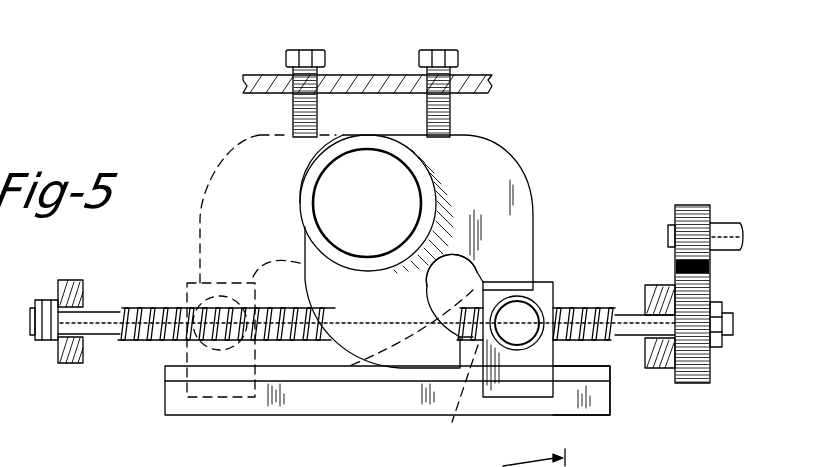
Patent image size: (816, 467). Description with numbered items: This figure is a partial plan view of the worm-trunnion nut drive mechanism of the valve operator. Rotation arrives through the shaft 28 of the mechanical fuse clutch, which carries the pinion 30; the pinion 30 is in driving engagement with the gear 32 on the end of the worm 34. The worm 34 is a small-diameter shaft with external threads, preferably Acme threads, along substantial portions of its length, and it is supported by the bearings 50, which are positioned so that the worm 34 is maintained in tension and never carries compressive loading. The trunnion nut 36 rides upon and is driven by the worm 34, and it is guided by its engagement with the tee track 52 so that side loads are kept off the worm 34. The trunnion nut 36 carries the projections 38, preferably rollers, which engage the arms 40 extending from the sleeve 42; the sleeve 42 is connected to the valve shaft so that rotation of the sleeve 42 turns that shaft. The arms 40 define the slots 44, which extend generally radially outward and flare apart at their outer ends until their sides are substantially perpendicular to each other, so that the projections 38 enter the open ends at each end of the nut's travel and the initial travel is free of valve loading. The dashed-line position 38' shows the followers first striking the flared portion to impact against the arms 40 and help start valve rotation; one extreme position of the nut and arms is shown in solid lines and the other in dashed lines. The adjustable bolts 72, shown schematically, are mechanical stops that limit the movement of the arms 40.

The shaft 28 is at (730, 222).
The pinion 30 is at (695, 205).
The gear 32 is at (700, 383).
The worm 34 is at (112, 335).
The trunnion nut 36 is at (535, 392).
The projections 38 is at (509, 363).
The followers in impact position 38' is at (332, 364).
The arms 40 is at (533, 212).
The sleeve 42 is at (433, 157).
The slots 44 is at (478, 272).
The bearings 50 is at (86, 260).
The tee track 52 is at (300, 418).
The adjustable bolts 72 is at (314, 50).